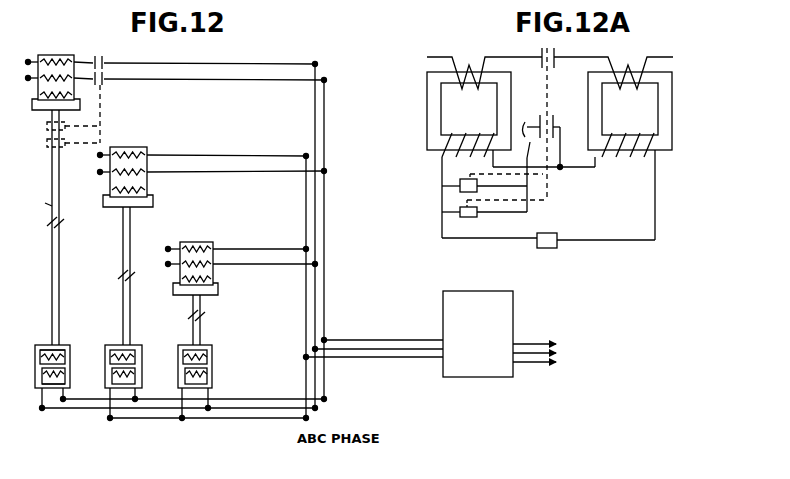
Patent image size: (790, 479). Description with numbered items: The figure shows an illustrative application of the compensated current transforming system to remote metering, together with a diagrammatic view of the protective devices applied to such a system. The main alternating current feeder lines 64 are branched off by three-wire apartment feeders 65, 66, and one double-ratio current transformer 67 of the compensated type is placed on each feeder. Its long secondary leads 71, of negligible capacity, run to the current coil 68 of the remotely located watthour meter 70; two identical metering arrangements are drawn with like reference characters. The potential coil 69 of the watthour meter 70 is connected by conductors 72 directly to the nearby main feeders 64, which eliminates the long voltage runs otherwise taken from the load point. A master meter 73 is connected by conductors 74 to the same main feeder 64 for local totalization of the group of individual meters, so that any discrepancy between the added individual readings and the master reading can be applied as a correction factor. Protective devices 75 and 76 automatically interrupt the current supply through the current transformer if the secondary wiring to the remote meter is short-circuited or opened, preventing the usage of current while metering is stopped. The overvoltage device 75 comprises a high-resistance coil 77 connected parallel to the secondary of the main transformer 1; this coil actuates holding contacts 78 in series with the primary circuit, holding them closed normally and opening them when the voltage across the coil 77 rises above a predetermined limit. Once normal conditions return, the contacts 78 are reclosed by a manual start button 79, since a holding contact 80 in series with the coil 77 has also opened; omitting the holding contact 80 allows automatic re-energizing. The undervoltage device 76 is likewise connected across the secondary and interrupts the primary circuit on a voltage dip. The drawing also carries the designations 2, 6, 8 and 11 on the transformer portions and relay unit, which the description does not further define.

In FIG. 12, the double-ratio current transformer 67 is at (48, 56).
In FIG. 12, the apartment feeder 65 is at (254, 81).
In FIG. 12, the apartment feeder 66 is at (254, 177).
In FIG. 12, the protective device 75 is at (62, 114).
In FIG. 12A, the protective device 75 is at (497, 169).
In FIG. 12, the protective device 76 is at (62, 144).
In FIG. 12A, the protective device 76 is at (461, 213).
In FIG. 12A, the coil 77 is at (466, 184).
In FIG. 12, the secondary leads 71 is at (59, 264).
In FIG. 12, the main alternating current feeder lines 64 is at (324, 388).
In FIG. 12, the current coil 68 is at (66, 350).
In FIG. 12, the potential coil 69 is at (64, 386).
In FIG. 12, the watthour meter 70 is at (69, 366).
In FIG. 12, the conductors 72 is at (251, 398).
In FIG. 12, the master meter 73 is at (486, 340).
In FIG. 12, the conductors 74 is at (430, 362).
In FIG. 12A, the holding contacts 78 is at (559, 48).
In FIG. 12A, the manual start button 79 is at (527, 163).
In FIG. 12A, the holding contact 80 is at (554, 122).
In FIG. 12A, the transformer 6 is at (484, 147).
In FIG. 12A, the transformer 8 is at (613, 148).
In FIG. 12A, the main transformer 1 is at (522, 92).
In FIG. 12A, the circuit section 2 is at (582, 92).
In FIG. 12A, the relay unit 11 is at (548, 233).